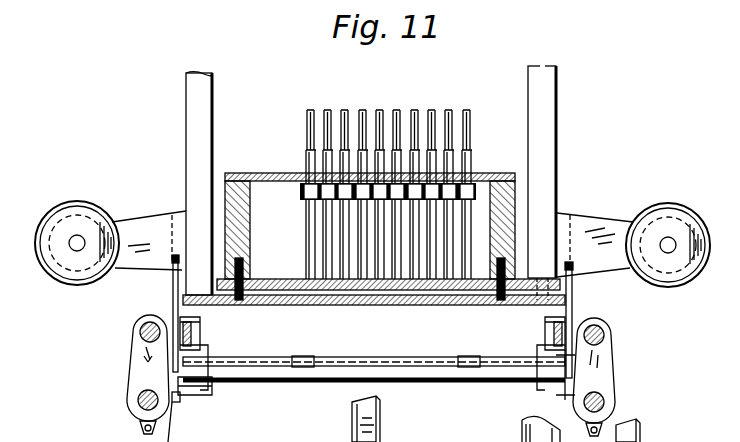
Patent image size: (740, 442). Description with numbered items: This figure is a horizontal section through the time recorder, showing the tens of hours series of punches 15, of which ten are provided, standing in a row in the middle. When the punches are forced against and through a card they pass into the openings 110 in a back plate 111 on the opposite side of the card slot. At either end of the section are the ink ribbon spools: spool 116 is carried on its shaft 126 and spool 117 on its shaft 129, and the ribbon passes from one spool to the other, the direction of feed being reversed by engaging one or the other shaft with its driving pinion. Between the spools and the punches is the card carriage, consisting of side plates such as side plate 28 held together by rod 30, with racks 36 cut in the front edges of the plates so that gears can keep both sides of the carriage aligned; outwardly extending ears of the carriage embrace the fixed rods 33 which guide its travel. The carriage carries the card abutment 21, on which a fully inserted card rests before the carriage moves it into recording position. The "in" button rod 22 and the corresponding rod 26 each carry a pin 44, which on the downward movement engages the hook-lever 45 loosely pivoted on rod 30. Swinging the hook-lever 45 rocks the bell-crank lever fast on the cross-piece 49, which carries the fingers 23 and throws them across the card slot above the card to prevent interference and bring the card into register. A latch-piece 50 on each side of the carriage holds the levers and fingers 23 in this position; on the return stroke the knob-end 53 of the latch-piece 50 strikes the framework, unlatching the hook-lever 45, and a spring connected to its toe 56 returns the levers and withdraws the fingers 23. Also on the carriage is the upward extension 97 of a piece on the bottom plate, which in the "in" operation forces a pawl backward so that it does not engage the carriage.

The tens of hours series of punches 15 is at (325, 252).
The card abutment 21 is at (352, 428).
The rod 22 is at (140, 404).
The fingers 23 is at (300, 357).
The rod 26 is at (604, 402).
The side plate 28 is at (536, 430).
The rod 30 is at (318, 384).
The fixed rods 33 is at (140, 333).
The racks 36 is at (562, 436).
The pin 44 is at (200, 398).
The hook-lever 45 is at (178, 422).
The cross-piece 49 is at (402, 358).
The latch-piece 50 is at (172, 291).
The knob-end 53 is at (174, 257).
The toe 56 is at (180, 398).
The upward extension 97 is at (640, 430).
The openings 110 is at (410, 304).
The back plate 111 is at (280, 301).
The spool 116 is at (674, 222).
The spool 117 is at (70, 216).
The shaft 126 is at (670, 252).
The shaft 129 is at (72, 250).